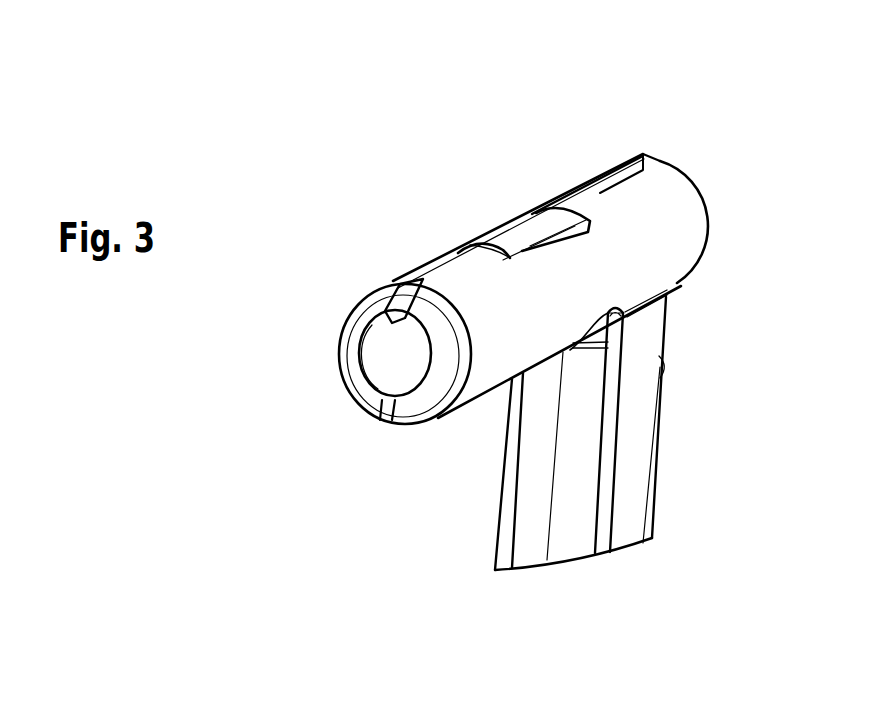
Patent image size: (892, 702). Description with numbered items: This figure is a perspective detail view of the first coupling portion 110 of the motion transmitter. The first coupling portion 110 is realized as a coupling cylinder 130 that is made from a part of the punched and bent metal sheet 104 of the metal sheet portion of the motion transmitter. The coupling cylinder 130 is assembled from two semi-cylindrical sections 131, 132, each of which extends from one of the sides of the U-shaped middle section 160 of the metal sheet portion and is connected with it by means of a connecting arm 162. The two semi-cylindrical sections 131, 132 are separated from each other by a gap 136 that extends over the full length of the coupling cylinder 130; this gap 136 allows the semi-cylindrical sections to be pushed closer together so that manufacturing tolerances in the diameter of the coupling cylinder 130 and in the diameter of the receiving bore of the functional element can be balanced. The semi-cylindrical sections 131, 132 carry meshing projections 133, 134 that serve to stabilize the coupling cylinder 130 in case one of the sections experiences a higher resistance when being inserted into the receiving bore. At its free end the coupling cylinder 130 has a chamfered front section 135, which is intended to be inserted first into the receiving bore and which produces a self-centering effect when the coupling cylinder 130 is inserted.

The coupling cylinder 130 is at (553, 118).
The semi-cylindrical section 131 is at (393, 281).
The semi-cylindrical section 132 is at (672, 205).
The meshing projection 133 is at (637, 153).
The meshing projection 134 is at (457, 260).
The chamfered front section 135 is at (333, 347).
The gap 136 is at (656, 152).
The connecting arm 162 is at (640, 347).
The punched and bent metal sheet 104 is at (630, 494).
The U-shaped middle section 160 is at (577, 500).
The first coupling portion 110 is at (398, 456).